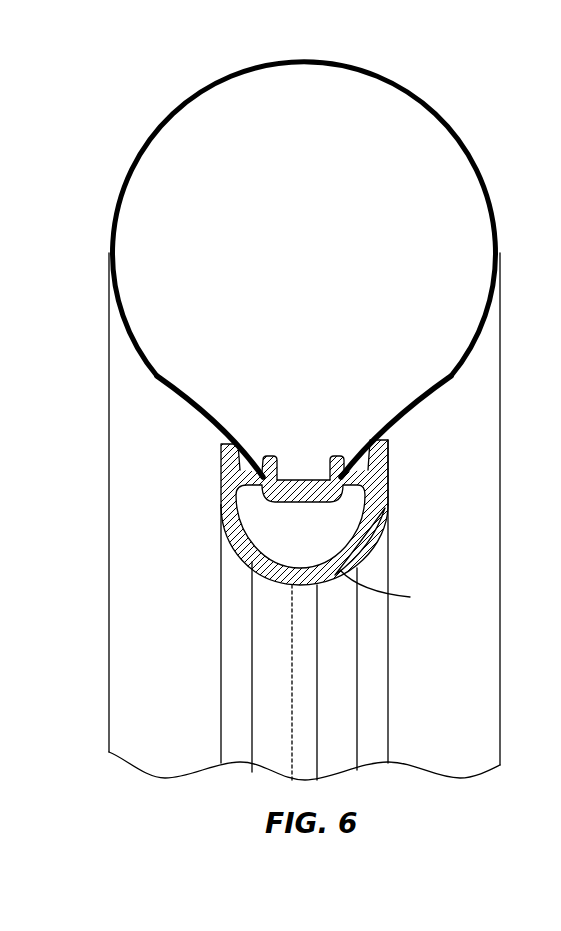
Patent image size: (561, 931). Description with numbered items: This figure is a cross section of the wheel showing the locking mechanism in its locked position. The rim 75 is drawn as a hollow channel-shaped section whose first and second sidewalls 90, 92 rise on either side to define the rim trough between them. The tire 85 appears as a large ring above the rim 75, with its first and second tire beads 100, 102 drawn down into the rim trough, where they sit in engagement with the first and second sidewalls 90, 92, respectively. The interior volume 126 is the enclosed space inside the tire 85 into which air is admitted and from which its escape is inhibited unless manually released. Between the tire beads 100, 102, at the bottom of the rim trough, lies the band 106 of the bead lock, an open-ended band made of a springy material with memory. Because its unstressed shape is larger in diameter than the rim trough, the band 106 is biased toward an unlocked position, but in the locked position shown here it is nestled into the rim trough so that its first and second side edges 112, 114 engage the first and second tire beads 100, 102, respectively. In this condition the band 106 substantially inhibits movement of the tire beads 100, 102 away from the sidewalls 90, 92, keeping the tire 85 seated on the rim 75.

The rim 75 is at (348, 571).
The tire 85 is at (468, 147).
The first sidewall 90 is at (390, 450).
The second sidewall 92 is at (221, 444).
The first tire bead 100 is at (390, 463).
The second tire bead 102 is at (221, 478).
The band 106 is at (305, 478).
The first side edge 112 is at (334, 458).
The second side edge 114 is at (275, 456).
The interior volume 126 is at (319, 241).